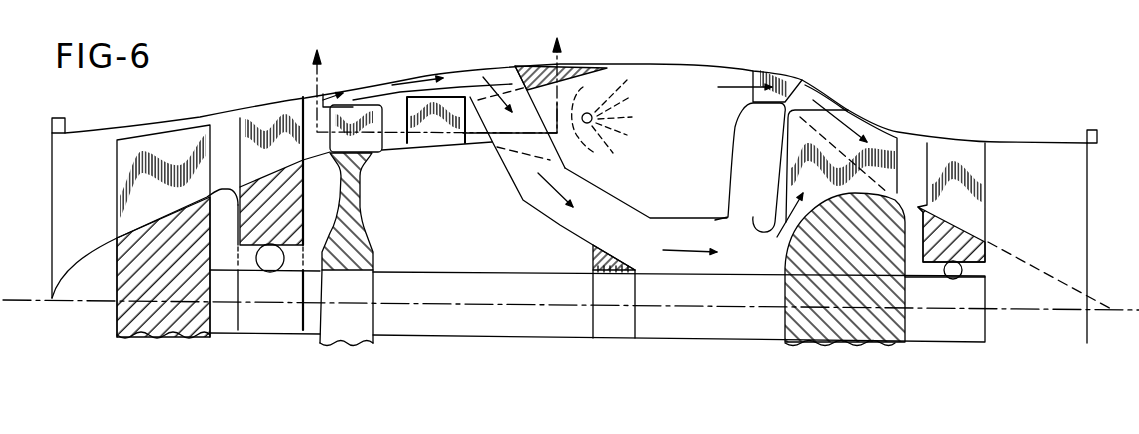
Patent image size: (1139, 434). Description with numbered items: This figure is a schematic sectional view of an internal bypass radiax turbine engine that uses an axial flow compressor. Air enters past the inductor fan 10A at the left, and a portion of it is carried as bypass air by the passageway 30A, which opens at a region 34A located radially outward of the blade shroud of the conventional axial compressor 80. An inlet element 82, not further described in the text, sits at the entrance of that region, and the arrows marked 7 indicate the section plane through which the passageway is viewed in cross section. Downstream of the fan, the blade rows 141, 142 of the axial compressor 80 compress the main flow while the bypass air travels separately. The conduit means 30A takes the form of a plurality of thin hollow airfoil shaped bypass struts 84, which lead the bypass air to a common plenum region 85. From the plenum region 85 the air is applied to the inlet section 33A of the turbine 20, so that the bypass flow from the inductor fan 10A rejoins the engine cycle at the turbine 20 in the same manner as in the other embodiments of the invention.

The inductor fan 10A is at (127, 168).
The section line 7- 7 is at (441, 74).
The bleed inlet 82 is at (352, 100).
The region radially outward of the blade shroud 34A is at (382, 80).
The passageway 30A is at (543, 100).
The compressor rotor blade 141 is at (375, 138).
The compressor stator vane 142 is at (440, 147).
The axial flow compressor 80 is at (363, 227).
The bypass struts 84 is at (600, 203).
The inlet section of the turbine 33A is at (753, 217).
The common plenum region 85 is at (693, 265).
The turbine 20 is at (845, 333).